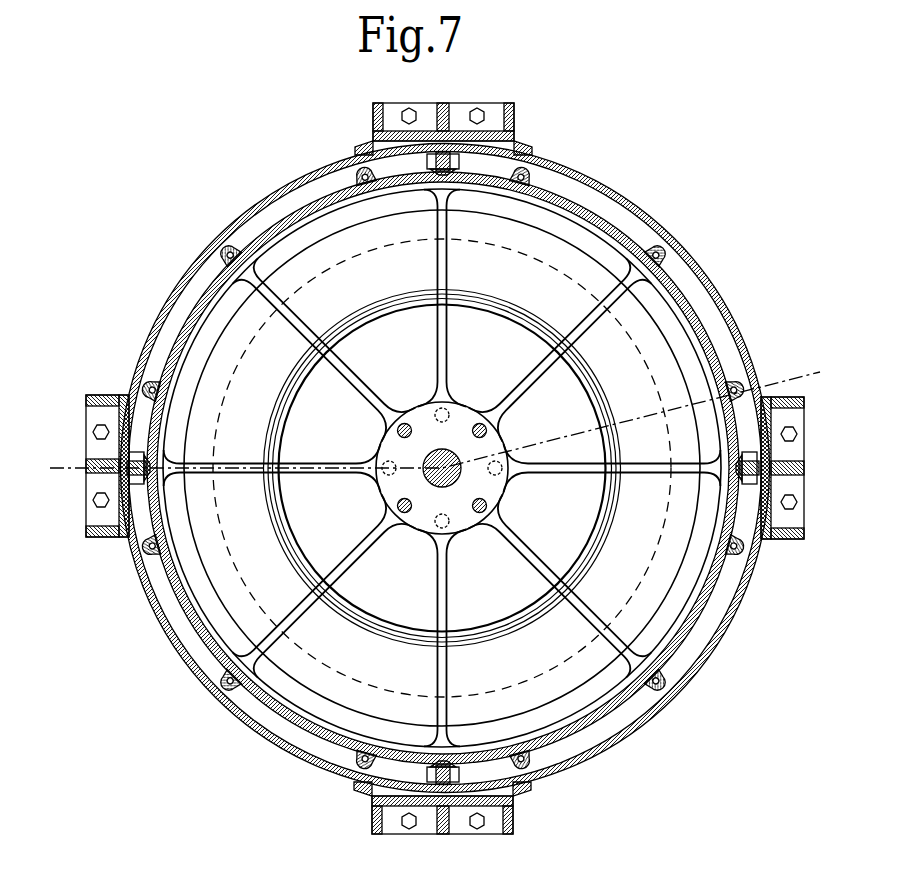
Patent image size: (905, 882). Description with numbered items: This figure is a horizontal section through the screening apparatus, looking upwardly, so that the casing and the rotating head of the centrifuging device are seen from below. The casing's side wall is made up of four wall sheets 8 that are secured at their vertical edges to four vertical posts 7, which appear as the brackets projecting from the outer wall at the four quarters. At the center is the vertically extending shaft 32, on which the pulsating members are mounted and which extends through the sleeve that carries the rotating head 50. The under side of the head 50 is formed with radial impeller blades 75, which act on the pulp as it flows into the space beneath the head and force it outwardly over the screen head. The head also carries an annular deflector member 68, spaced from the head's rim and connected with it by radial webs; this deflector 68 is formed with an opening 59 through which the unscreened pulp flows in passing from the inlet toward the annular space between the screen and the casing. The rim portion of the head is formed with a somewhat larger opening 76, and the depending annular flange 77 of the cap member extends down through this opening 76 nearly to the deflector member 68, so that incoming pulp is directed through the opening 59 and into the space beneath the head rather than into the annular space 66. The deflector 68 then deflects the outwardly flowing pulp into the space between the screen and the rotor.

The vertical posts 7 is at (450, 128).
The wall sheets 8 is at (668, 234).
The rotating head 50 is at (688, 298).
The opening 59 is at (315, 412).
The shaft 32 is at (428, 478).
The radial impeller blades 75 is at (547, 362).
The depending annular flange 77 is at (388, 308).
The annular space 66 is at (656, 597).
The annular deflector member 68 is at (685, 590).
The opening 76 is at (570, 658).